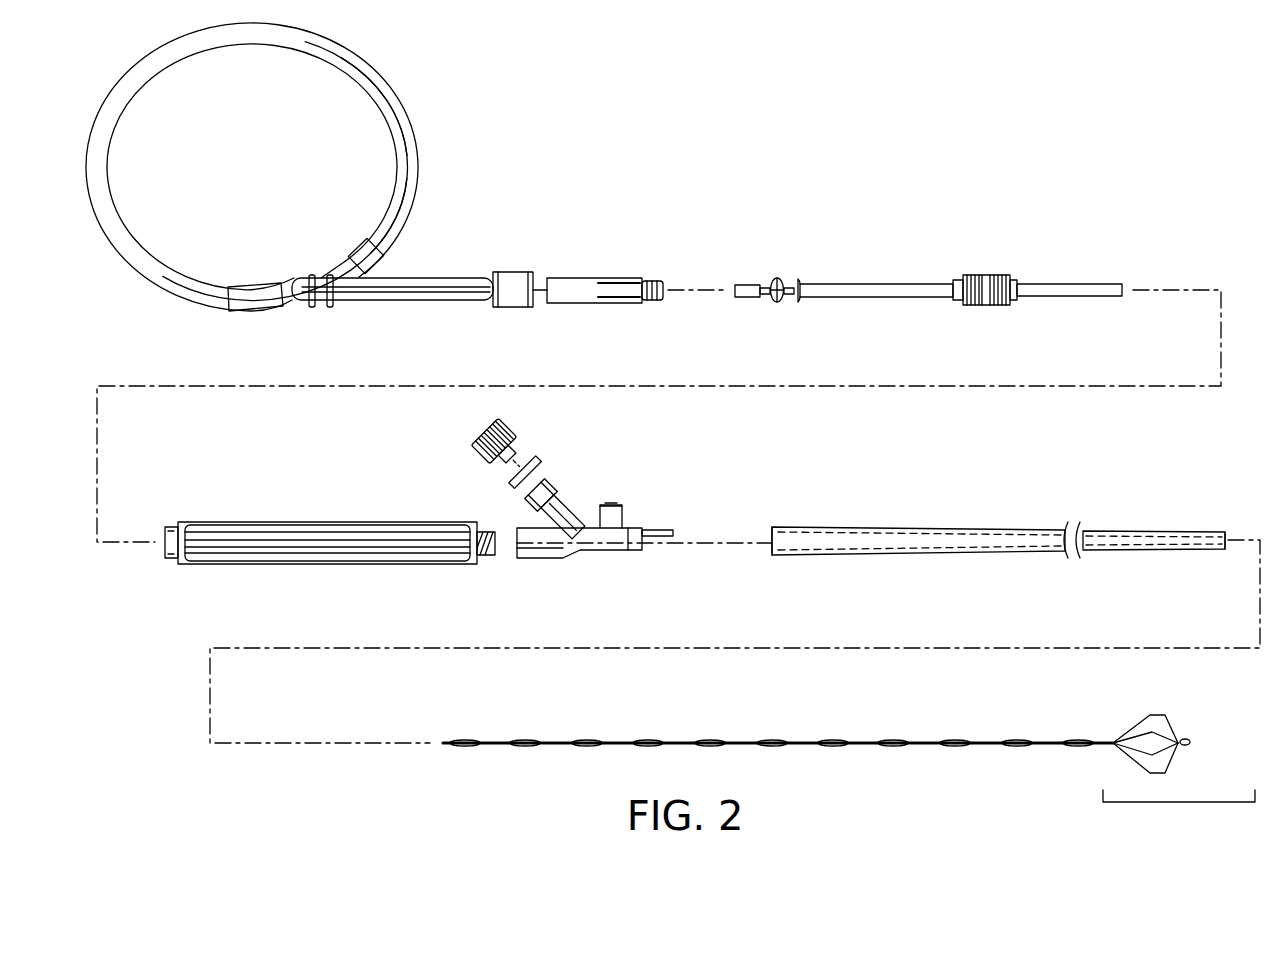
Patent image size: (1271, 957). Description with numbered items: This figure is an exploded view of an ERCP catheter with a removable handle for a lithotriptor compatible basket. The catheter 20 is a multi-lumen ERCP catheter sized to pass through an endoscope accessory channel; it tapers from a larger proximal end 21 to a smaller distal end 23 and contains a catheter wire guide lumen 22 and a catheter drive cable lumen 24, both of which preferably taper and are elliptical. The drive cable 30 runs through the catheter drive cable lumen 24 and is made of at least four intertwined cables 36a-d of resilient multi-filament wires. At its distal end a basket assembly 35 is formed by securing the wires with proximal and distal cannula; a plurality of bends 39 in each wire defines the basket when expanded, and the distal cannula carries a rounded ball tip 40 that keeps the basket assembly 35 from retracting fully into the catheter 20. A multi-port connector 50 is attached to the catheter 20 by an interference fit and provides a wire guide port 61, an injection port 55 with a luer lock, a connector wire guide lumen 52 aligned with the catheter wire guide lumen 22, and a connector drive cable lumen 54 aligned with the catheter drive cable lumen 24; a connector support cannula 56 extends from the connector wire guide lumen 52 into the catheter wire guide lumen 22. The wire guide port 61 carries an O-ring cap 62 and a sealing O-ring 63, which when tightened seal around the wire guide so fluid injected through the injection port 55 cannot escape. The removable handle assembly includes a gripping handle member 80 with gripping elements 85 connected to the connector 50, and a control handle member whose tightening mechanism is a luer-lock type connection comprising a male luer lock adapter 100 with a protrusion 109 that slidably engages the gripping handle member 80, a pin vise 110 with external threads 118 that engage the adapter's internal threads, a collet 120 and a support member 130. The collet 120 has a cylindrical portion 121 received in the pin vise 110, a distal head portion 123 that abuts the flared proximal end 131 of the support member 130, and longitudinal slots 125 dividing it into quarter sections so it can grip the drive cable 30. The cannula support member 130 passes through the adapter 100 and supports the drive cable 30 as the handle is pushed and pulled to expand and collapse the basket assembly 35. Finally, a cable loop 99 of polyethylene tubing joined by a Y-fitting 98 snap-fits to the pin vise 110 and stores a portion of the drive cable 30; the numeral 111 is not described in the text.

The cable loop 99 is at (372, 57).
The Y-fitting 98 is at (290, 281).
The pin vise 110 is at (600, 277).
The connector block 111 is at (547, 308).
The external threads 118 is at (658, 280).
The collet 120 is at (752, 283).
The cylindrical portion 121 is at (746, 301).
The distal head portion 123 is at (785, 273).
The longitudinal slot 125 is at (766, 300).
The support member 130 is at (893, 283).
The flared proximal end 131 is at (801, 306).
The male luer lock adapter 100 is at (988, 273).
The protrusion 109 is at (1021, 277).
The gripping handle member 80 is at (330, 536).
The gripping elements 85 is at (400, 555).
The O-ring cap 62 is at (470, 458).
The sealing O-ring 63 is at (540, 460).
The wire guide port 61 is at (563, 490).
The connector wire guide lumen 52 is at (592, 526).
The injection port 55 is at (626, 512).
The connector support cannula 56 is at (664, 527).
The connector drive cable lumen 54 is at (547, 557).
The multi-port connector 50 is at (617, 525).
The catheter 20 is at (998, 537).
The catheter wire guide lumen 22 is at (855, 525).
The catheter drive cable lumen 24 is at (882, 553).
The proximal end 21 is at (775, 559).
The distal end 23 is at (1223, 553).
The drive cable 30 is at (778, 745).
The cables 36a-d is at (640, 738).
The basket assembly 35 is at (1179, 754).
The bends 39 is at (1173, 731).
The ball tip 40 is at (1193, 753).